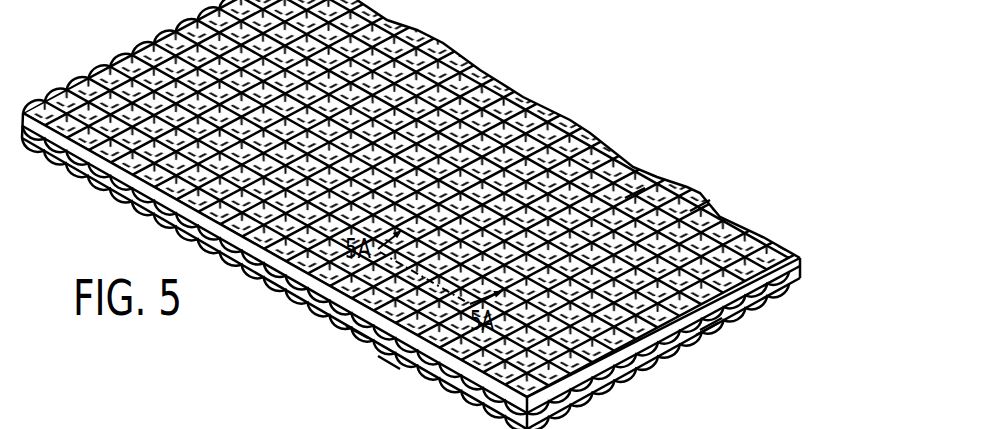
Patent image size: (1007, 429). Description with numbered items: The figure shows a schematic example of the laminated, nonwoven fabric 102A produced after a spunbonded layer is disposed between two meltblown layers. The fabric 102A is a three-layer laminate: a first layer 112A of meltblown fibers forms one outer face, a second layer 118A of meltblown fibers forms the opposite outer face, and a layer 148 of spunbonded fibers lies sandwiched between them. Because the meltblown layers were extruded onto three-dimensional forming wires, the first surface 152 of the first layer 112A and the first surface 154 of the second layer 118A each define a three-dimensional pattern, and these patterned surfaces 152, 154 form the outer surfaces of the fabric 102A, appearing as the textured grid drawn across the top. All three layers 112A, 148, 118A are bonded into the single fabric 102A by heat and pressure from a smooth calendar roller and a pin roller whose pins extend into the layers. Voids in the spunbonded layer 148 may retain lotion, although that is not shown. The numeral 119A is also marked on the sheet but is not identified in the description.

The laminated nonwoven fabric 102A is at (552, 70).
The first layer of meltblown fibers 112A is at (635, 193).
The first surface of the first layer 152 is at (700, 207).
The second layer of meltblown fibers 118A is at (707, 330).
The bottom layer 119A is at (737, 373).
The layer of spunbonded fibers 148 is at (356, 332).
The first surface of the second layer 154 is at (388, 362).